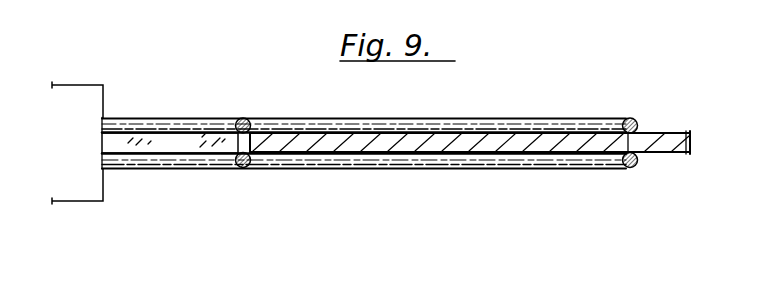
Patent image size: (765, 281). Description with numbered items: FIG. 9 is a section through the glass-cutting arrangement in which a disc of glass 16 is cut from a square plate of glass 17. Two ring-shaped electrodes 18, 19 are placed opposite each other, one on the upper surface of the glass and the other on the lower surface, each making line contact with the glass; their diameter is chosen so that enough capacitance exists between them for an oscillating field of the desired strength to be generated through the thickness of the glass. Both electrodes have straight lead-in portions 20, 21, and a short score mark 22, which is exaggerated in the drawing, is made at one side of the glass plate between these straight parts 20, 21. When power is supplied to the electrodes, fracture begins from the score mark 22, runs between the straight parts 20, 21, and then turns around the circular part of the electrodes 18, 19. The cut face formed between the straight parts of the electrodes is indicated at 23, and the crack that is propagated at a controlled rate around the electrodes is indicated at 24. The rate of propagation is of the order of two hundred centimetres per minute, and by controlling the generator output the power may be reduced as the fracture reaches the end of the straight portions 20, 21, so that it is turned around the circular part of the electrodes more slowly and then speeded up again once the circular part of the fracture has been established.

The disc of glass 16 is at (562, 137).
The square plate of glass 17 is at (677, 146).
The ring-shaped electrode 18 is at (472, 122).
The ring-shaped electrode 19 is at (397, 159).
The straight lead in portion 20 is at (157, 123).
The straight lead in portion 21 is at (183, 161).
The score mark 22 is at (102, 134).
The cut face 23 is at (207, 139).
The crack 24 is at (257, 132).